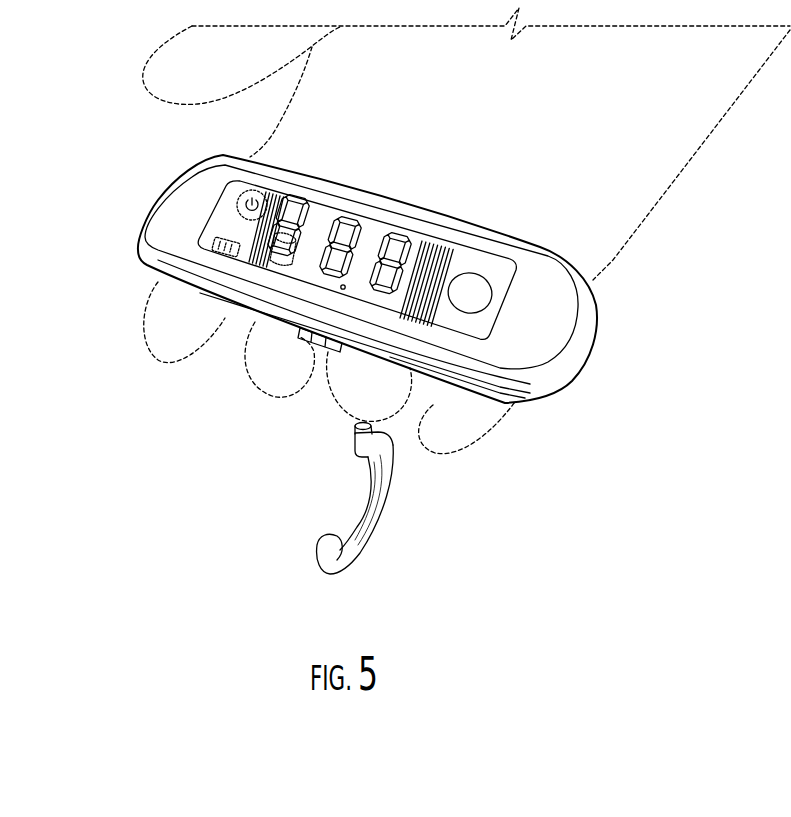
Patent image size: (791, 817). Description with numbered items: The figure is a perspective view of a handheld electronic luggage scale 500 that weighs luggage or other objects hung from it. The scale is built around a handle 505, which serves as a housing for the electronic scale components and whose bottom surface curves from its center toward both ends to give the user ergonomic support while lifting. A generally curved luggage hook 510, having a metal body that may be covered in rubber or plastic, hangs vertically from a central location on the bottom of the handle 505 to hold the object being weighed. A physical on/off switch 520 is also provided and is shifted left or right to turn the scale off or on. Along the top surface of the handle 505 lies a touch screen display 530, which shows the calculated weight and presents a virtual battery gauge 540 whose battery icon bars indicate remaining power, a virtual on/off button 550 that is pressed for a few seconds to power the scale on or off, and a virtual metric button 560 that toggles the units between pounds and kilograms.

The electronic luggage scale 500 is at (652, 361).
The handle 505 is at (572, 409).
The luggage hook 510 is at (342, 477).
The physical on/off switch 520 is at (292, 350).
The touch screen display 530 is at (512, 258).
The virtual battery gauge 540 is at (209, 254).
The virtual on/off button 550 is at (225, 209).
The virtual metric button 560 is at (502, 293).